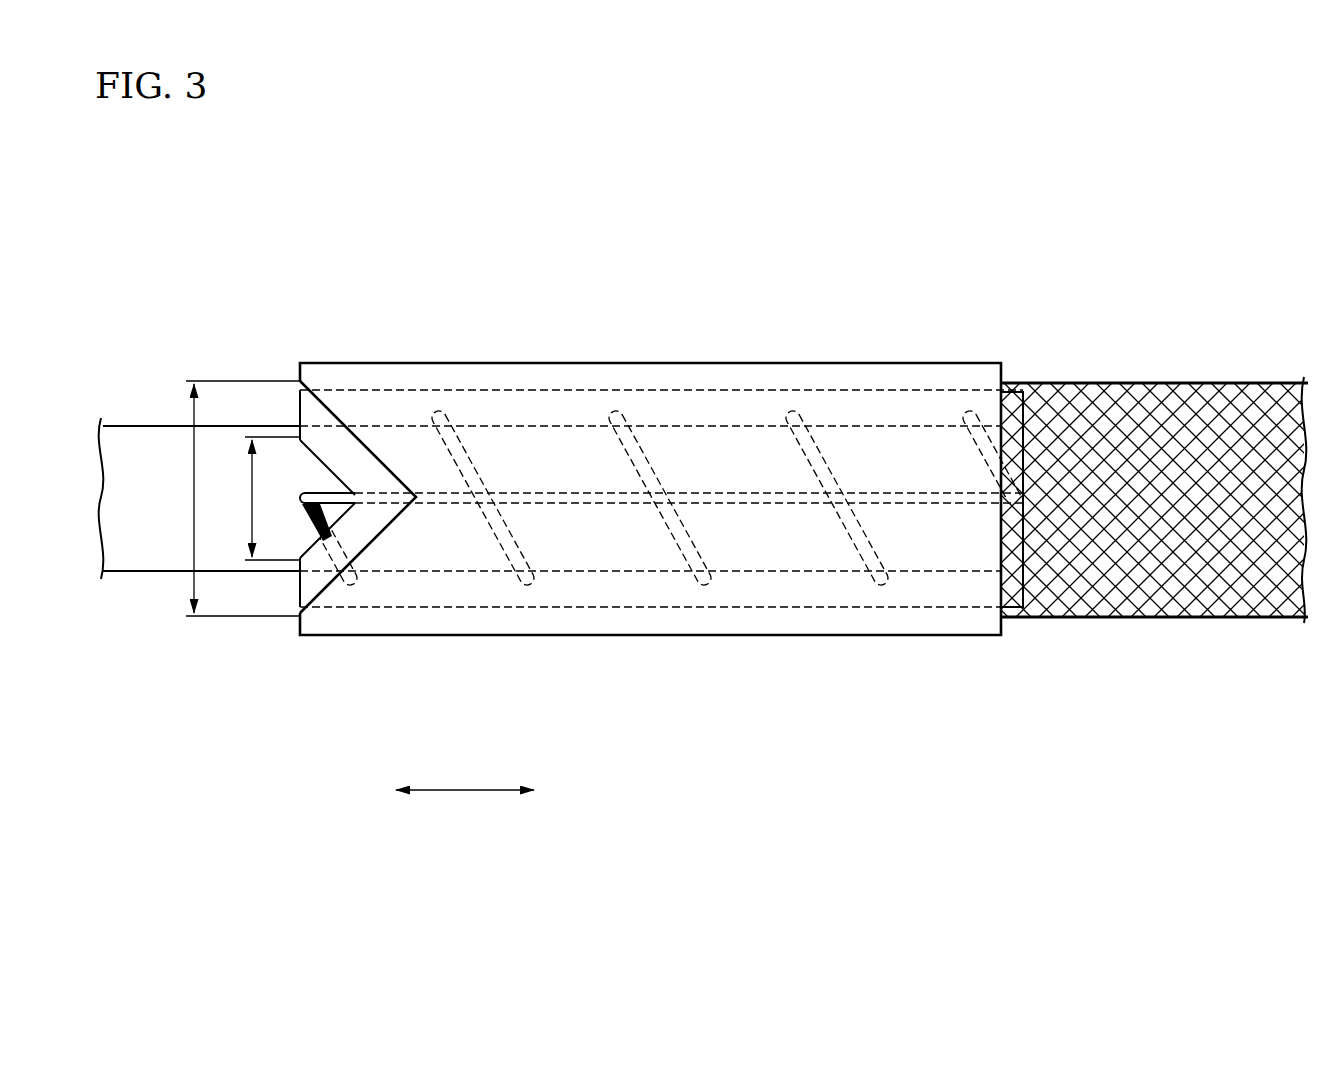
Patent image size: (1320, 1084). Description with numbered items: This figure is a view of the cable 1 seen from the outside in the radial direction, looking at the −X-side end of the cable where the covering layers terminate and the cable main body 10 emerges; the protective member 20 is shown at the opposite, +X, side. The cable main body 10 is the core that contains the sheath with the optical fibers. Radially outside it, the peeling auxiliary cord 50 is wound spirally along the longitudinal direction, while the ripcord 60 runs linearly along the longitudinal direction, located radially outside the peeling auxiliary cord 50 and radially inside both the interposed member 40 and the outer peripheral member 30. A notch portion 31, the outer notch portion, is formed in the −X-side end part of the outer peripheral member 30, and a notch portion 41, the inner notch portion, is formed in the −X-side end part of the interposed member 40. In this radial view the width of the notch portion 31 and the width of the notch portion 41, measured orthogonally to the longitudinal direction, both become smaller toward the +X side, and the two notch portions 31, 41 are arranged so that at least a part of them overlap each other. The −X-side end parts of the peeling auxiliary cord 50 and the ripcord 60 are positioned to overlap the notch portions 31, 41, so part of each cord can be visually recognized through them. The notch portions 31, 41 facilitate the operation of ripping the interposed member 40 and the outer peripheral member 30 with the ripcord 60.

The cable 1 is at (253, 268).
The cable main body 10 is at (143, 421).
The protective member 20 is at (1136, 380).
The outer peripheral member 30 is at (861, 638).
The notch portion 31 is at (318, 598).
The interposed member 40 is at (565, 389).
The notch portion 41 is at (326, 466).
The peeling auxiliary cord 50 is at (501, 547).
The ripcord 60 is at (600, 504).